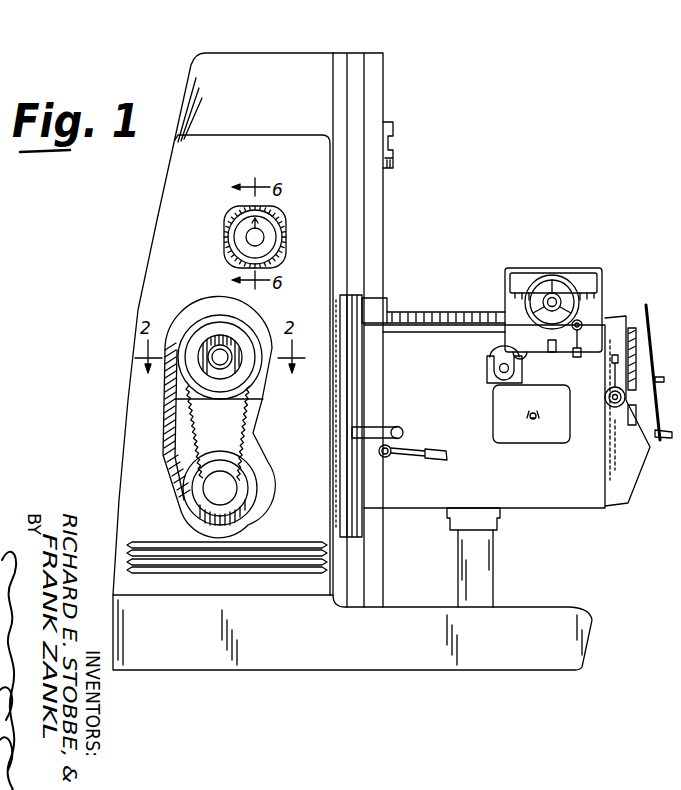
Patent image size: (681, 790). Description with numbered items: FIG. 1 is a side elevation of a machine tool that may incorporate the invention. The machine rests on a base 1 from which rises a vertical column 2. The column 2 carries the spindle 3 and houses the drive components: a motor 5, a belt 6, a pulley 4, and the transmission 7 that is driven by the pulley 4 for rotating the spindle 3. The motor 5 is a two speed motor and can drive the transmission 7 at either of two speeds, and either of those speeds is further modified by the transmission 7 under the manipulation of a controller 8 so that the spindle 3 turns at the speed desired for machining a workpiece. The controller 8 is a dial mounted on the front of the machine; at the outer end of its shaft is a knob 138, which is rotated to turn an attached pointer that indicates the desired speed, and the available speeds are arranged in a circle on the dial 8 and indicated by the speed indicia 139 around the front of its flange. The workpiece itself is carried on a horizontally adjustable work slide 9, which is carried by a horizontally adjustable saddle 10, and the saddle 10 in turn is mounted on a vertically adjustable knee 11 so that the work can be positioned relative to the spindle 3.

The base 1 is at (286, 648).
The vertical column 2 is at (168, 193).
The spindle 3 is at (392, 134).
The pulley 4 is at (206, 330).
The motor 5 is at (255, 477).
The belt 6 is at (245, 423).
The transmission 7 is at (180, 389).
The controller 8 is at (294, 207).
The work slide 9 is at (592, 270).
The saddle 10 is at (538, 338).
The knee 11 is at (540, 487).
The knob 138 is at (248, 233).
The speed indicia 139 is at (232, 248).